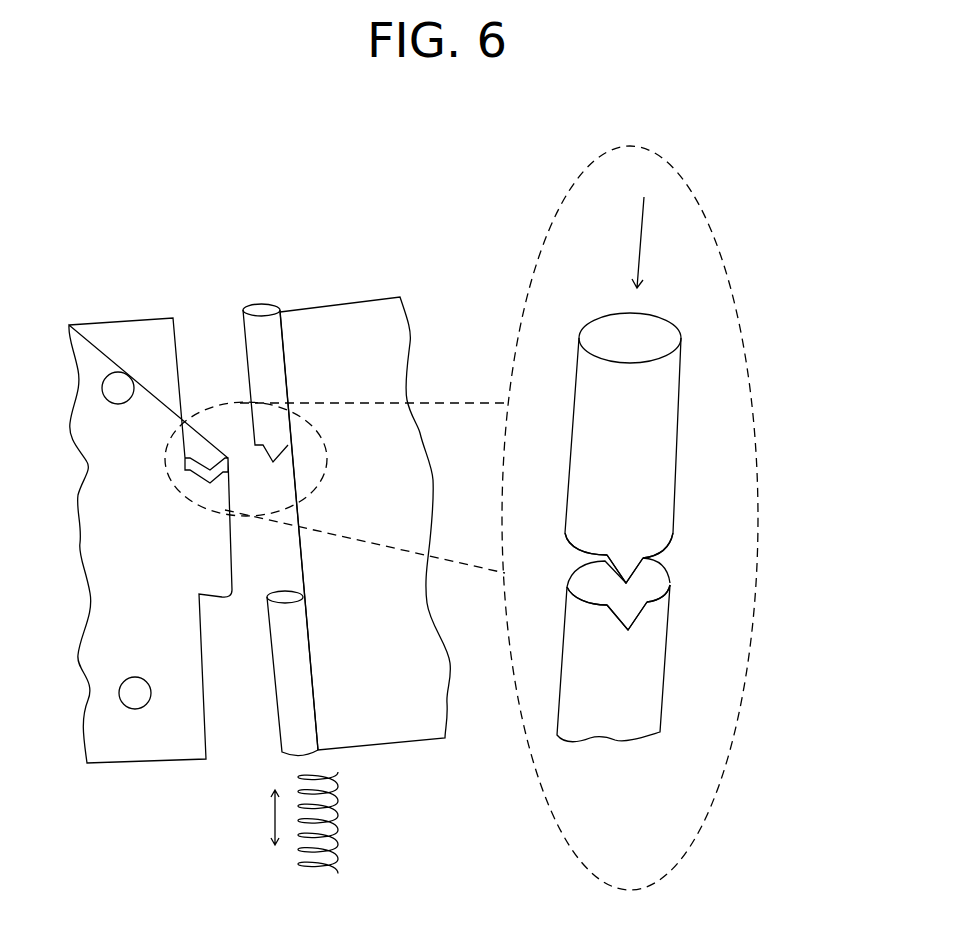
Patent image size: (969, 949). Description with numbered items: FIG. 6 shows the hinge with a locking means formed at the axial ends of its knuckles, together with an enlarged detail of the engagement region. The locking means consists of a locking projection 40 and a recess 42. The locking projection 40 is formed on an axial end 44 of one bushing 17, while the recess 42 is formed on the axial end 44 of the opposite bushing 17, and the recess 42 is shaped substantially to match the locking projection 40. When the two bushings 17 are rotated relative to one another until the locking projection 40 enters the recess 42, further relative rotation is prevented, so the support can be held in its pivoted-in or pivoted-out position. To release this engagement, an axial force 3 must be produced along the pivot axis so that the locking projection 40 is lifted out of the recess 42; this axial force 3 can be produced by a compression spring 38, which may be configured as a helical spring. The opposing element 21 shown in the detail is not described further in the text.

The axial force 3 is at (252, 818).
The bushing 17 is at (263, 332).
The counter pin 21 is at (625, 710).
The compression spring 38 is at (298, 865).
The locking projection 40 is at (628, 560).
The recess 42 is at (628, 613).
The axial end 44 is at (637, 517).